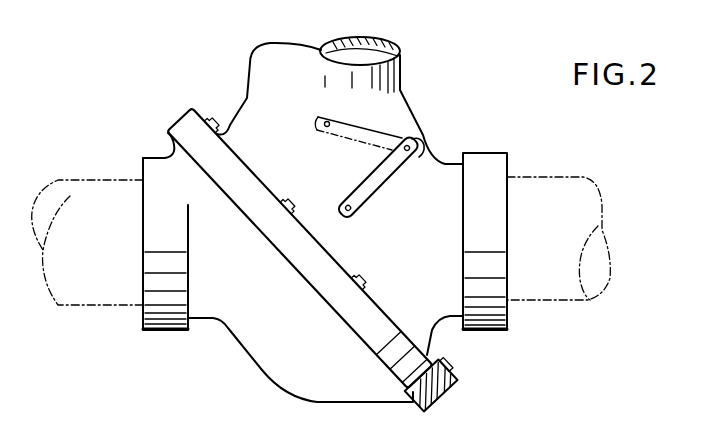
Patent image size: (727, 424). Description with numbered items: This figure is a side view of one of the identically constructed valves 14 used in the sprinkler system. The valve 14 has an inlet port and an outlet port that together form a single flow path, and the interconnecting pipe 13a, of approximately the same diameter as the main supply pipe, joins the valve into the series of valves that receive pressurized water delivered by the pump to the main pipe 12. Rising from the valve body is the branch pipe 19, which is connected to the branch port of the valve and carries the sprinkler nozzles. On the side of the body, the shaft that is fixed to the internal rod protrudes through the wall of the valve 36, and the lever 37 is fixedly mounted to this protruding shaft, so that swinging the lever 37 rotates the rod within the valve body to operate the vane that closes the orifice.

The main pipe 12 is at (547, 290).
The interconnecting pipe 13a is at (78, 295).
The valve 14 is at (236, 348).
The branch pipe 19 is at (393, 78).
The wall of the valve 36 is at (412, 142).
The lever 37 is at (372, 138).